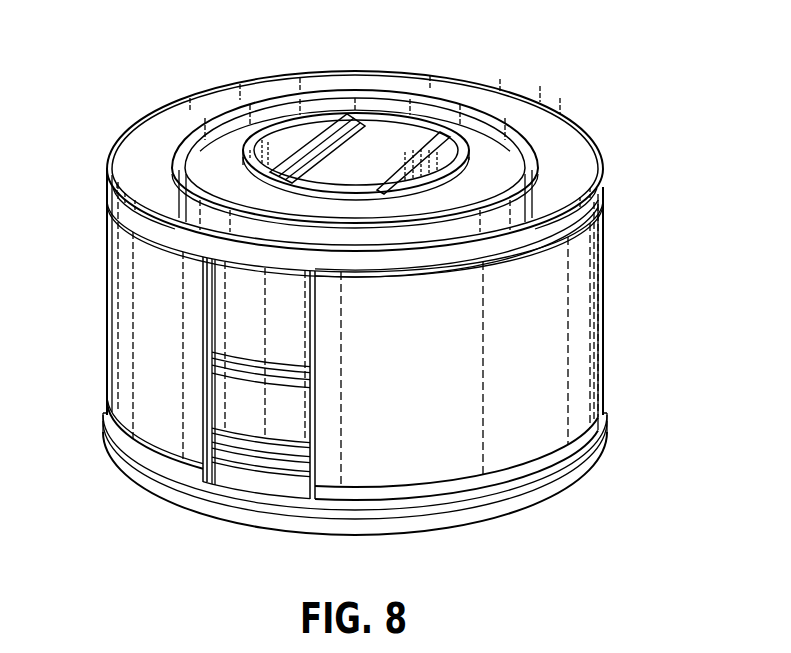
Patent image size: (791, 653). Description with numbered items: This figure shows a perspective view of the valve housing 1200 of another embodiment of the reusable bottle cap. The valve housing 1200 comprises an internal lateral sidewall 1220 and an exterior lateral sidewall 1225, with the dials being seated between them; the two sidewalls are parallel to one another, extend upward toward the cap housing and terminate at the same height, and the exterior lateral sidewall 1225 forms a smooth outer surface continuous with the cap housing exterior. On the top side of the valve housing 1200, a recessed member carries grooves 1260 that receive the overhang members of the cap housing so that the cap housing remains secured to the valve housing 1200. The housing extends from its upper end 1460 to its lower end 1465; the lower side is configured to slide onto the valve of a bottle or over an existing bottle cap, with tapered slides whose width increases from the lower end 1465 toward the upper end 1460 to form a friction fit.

The valve housing 1200 is at (660, 179).
The internal lateral sidewall 1220 is at (187, 197).
The exterior lateral sidewall 1225 is at (107, 268).
The grooves 1260 is at (376, 156).
The upper end 1460 is at (602, 194).
The lower end 1465 is at (593, 460).